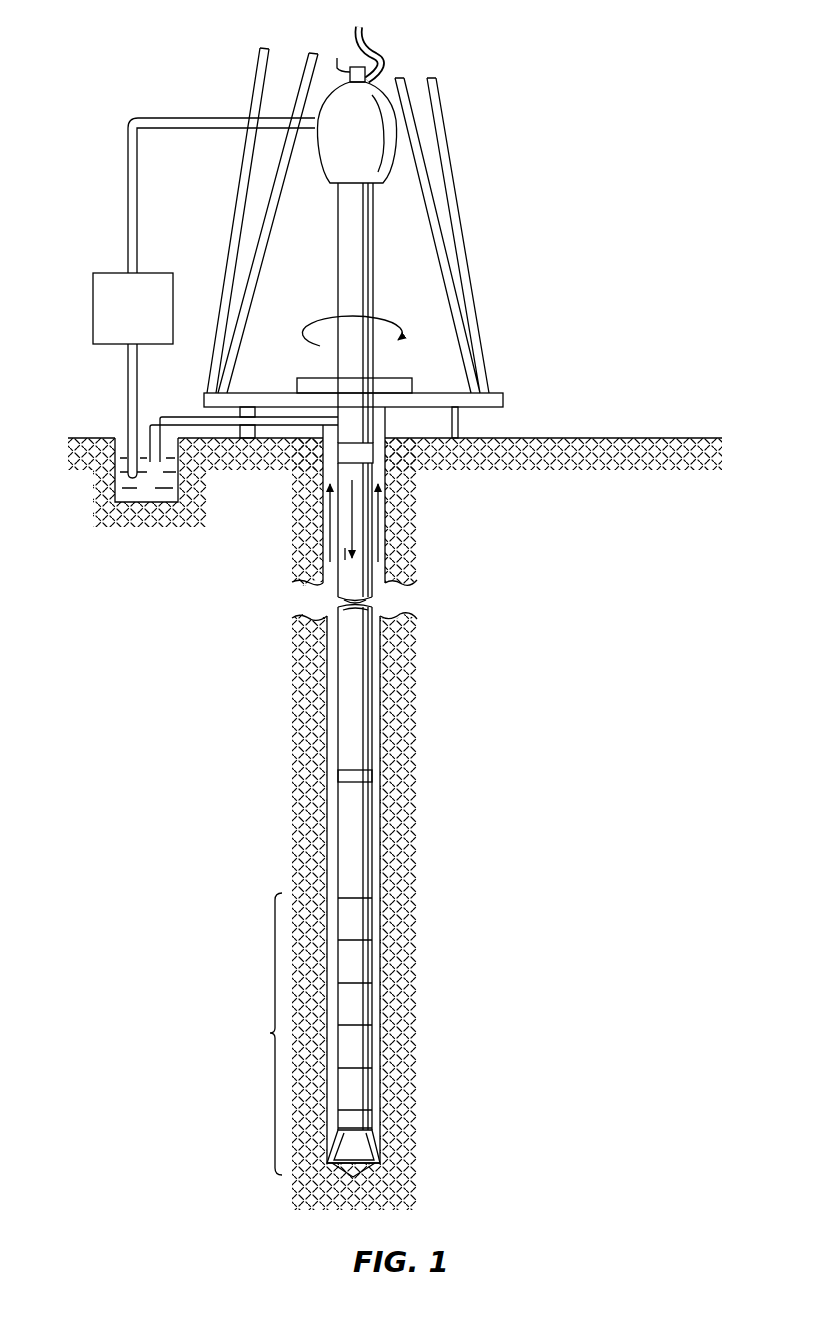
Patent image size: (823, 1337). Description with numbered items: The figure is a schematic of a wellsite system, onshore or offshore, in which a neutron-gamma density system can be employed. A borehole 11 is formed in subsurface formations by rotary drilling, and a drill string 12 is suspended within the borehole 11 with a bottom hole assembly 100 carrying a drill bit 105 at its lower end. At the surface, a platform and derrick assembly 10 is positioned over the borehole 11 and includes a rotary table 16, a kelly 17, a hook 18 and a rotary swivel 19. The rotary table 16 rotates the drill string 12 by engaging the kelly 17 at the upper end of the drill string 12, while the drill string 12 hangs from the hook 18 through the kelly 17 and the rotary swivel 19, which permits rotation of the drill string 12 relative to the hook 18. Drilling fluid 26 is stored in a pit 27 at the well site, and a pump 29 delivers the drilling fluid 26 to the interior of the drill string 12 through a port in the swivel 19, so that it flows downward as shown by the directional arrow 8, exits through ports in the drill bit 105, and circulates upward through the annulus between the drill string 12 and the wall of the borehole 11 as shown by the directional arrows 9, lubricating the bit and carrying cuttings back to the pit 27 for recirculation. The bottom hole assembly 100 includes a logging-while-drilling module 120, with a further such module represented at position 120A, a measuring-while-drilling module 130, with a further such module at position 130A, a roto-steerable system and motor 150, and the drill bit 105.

The platform and derrick assembly 10 is at (518, 67).
The directional arrow 8 is at (345, 548).
The directional arrows 9 is at (325, 528).
The borehole 11 is at (381, 440).
The drill string 12 is at (350, 430).
The rotary table 16 is at (393, 378).
The kelly 17 is at (340, 358).
The hook 18 is at (370, 37).
The rotary swivel 19 is at (322, 178).
The drilling fluid 26 is at (153, 503).
The pit 27 is at (120, 435).
The pump 29 is at (93, 290).
The bottom hole assembly 100 is at (270, 1033).
The drill bit 105 is at (360, 1153).
The logging-while-drilling module 120 is at (360, 963).
The measuring-while-drilling module 130 is at (360, 1005).
The additional LWD module 120A is at (360, 1047).
The additional MWD module 130A is at (360, 1090).
The roto-steerable system and motor 150 is at (360, 1120).